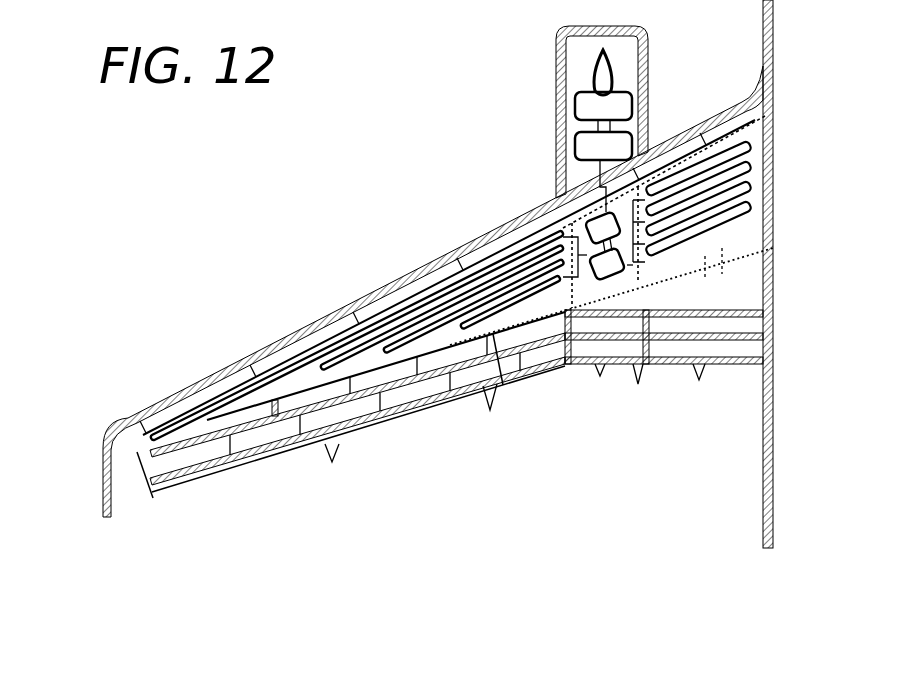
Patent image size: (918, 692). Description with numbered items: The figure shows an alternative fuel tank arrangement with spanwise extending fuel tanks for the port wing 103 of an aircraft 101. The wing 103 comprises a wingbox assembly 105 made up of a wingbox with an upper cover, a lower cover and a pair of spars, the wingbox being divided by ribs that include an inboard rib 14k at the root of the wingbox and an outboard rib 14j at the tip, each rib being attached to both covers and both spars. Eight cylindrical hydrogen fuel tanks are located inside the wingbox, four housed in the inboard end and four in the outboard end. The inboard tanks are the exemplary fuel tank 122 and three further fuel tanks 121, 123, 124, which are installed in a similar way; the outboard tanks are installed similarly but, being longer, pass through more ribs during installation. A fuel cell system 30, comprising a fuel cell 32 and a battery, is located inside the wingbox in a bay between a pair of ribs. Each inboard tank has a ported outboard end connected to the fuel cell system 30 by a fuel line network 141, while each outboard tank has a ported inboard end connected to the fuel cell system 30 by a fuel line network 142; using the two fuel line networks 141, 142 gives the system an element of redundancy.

The outboard rib 14j is at (157, 442).
The inboard rib 14k is at (746, 218).
The fuel cell system 30 is at (600, 293).
The fuel cell 32 is at (612, 276).
The aircraft 101 is at (640, 507).
The port wing 103 is at (435, 465).
The wingbox assembly 105 is at (738, 281).
The fuel tank 121 is at (694, 250).
The fuel tank 122 is at (742, 182).
The fuel tank 123 is at (737, 162).
The fuel tank 124 is at (730, 156).
The fuel line network 141 is at (645, 285).
The fuel line network 142 is at (567, 218).